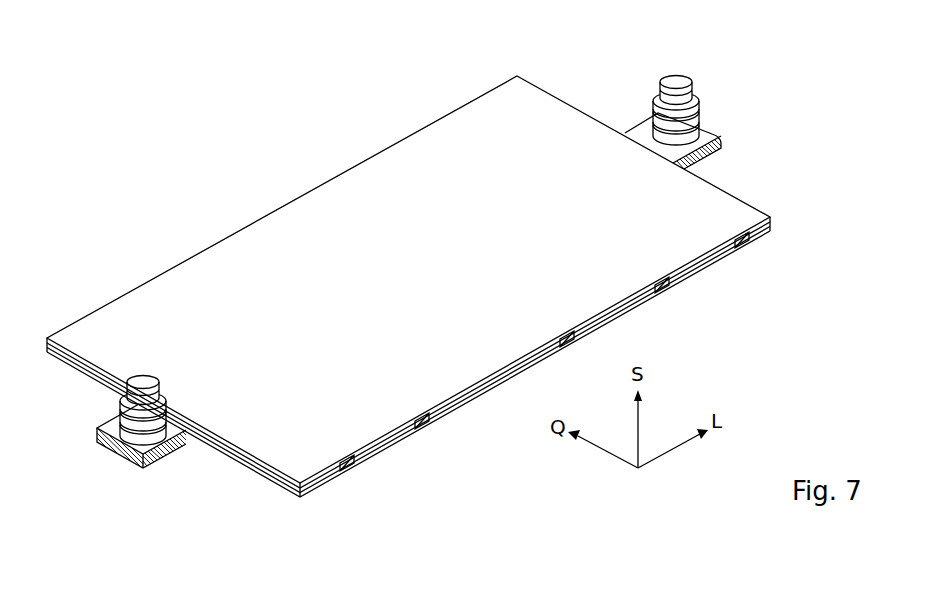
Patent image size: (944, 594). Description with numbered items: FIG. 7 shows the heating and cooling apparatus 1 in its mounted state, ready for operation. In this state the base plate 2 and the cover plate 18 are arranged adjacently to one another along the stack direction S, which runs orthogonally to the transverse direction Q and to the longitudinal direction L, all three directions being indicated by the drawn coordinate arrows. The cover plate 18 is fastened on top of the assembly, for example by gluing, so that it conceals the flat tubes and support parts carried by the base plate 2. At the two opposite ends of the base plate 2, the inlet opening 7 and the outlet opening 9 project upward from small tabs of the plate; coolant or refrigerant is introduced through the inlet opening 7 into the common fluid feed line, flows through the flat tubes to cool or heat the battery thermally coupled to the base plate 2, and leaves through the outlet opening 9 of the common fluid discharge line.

The heating and cooling apparatus 1 is at (184, 157).
The base plate 2 is at (732, 121).
The inlet opening 7 is at (143, 380).
The outlet opening 9 is at (677, 80).
The cover plate 18 is at (311, 200).